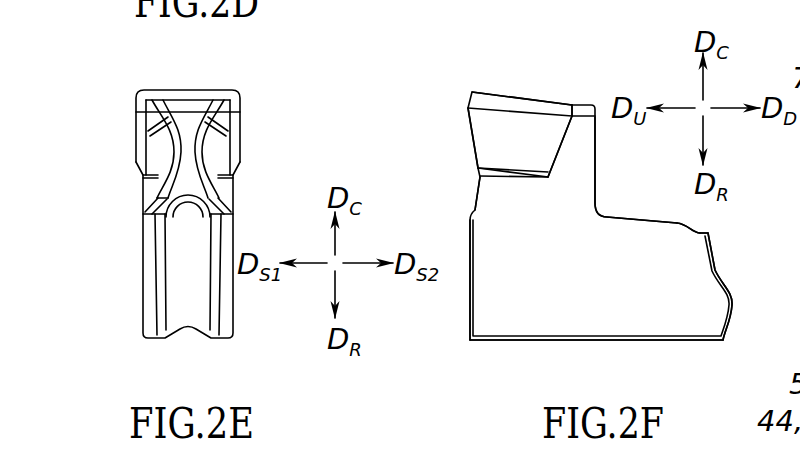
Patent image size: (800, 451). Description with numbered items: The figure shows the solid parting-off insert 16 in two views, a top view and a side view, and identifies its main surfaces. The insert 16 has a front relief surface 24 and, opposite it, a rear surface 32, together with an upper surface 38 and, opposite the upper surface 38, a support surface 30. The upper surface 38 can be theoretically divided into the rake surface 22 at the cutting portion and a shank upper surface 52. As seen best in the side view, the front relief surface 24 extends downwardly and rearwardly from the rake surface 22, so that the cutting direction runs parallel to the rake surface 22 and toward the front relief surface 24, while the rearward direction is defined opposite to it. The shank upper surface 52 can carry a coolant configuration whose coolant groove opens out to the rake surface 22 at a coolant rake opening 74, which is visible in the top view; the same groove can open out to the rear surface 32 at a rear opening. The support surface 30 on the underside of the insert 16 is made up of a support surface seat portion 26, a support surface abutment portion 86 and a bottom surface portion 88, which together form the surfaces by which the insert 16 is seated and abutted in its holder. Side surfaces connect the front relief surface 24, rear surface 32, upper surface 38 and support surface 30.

In FIG. 2E, the solid parting-off insert 16 is at (133, 70).
In FIG. 2F, the solid parting-off insert 16 is at (468, 71).
In FIG. 2E, the coolant rake opening 74 is at (163, 192).
In FIG. 2F, the rake surface 22 is at (465, 118).
In FIG. 2F, the front relief surface 24 is at (515, 93).
In FIG. 2F, the upper surface 38 is at (452, 181).
In FIG. 2F, the shank upper surface 52 is at (468, 264).
In FIG. 2F, the support surface seat portion 26 is at (598, 172).
In FIG. 2F, the support surface abutment portion 86 is at (678, 222).
In FIG. 2F, the support surface 30 is at (718, 223).
In FIG. 2F, the bottom surface portion 88 is at (737, 297).
In FIG. 2F, the rear surface 32 is at (497, 344).